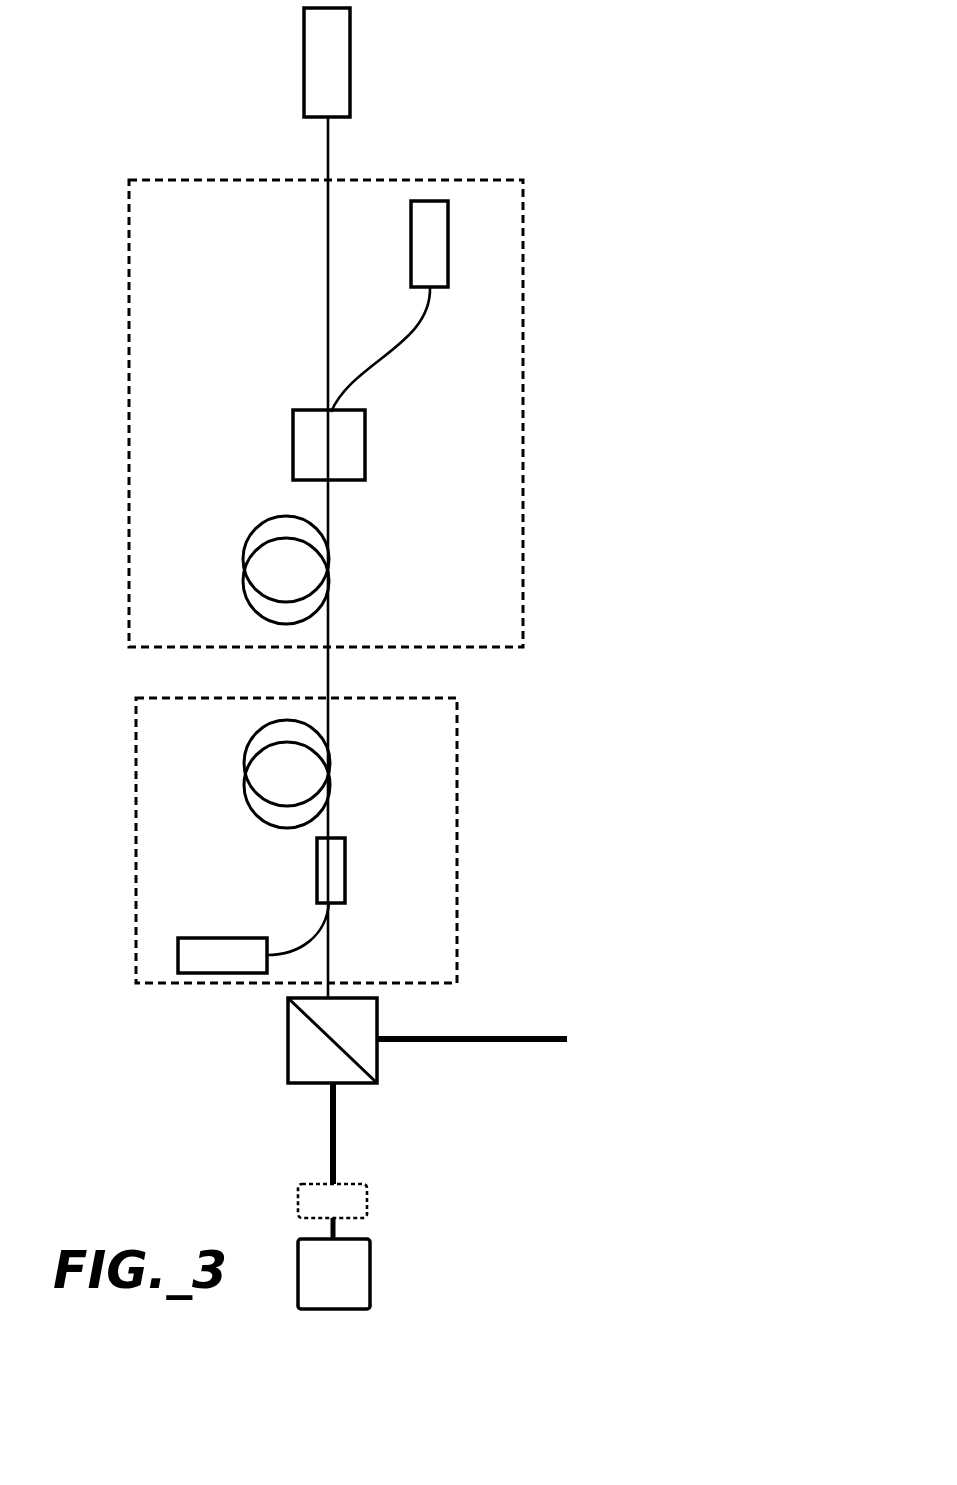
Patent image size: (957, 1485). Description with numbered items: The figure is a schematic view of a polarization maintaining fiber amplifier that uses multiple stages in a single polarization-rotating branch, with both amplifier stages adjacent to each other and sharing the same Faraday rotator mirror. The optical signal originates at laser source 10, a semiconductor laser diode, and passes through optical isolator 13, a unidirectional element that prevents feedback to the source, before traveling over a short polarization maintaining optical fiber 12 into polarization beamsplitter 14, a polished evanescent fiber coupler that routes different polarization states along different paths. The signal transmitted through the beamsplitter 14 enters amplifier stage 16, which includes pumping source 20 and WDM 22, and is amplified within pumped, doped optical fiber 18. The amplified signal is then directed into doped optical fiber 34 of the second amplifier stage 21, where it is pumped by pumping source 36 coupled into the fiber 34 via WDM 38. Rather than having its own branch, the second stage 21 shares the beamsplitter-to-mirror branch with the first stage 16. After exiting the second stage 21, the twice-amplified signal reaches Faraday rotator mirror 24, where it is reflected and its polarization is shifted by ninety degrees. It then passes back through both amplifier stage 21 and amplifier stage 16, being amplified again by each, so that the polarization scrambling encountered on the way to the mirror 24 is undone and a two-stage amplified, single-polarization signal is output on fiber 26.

The laser source 10 is at (372, 1280).
The polarization maintaining optical fiber 12 is at (328, 1125).
The optical isolator 13 is at (368, 1205).
The polarization beamsplitter 14 is at (285, 1053).
The amplifier stage 16 is at (458, 838).
The doped optical fiber 18 is at (243, 763).
The pumping source 20 is at (230, 938).
The amplifier stage 21 is at (525, 548).
The WDM 22 is at (317, 878).
The Faraday rotator mirror 24 is at (352, 62).
The fiber 26 is at (508, 1033).
The doped optical fiber 34 is at (243, 560).
The pumping source 36 is at (449, 262).
The WDM 38 is at (292, 445).